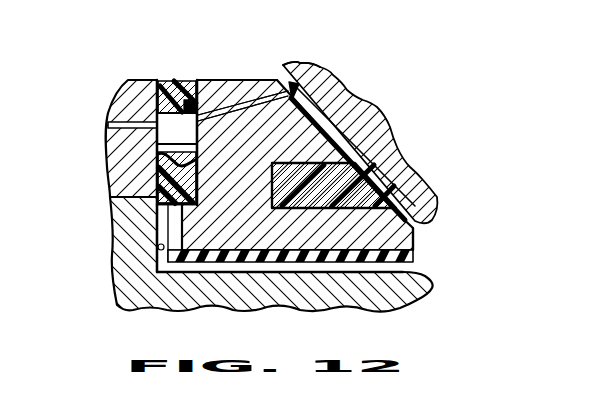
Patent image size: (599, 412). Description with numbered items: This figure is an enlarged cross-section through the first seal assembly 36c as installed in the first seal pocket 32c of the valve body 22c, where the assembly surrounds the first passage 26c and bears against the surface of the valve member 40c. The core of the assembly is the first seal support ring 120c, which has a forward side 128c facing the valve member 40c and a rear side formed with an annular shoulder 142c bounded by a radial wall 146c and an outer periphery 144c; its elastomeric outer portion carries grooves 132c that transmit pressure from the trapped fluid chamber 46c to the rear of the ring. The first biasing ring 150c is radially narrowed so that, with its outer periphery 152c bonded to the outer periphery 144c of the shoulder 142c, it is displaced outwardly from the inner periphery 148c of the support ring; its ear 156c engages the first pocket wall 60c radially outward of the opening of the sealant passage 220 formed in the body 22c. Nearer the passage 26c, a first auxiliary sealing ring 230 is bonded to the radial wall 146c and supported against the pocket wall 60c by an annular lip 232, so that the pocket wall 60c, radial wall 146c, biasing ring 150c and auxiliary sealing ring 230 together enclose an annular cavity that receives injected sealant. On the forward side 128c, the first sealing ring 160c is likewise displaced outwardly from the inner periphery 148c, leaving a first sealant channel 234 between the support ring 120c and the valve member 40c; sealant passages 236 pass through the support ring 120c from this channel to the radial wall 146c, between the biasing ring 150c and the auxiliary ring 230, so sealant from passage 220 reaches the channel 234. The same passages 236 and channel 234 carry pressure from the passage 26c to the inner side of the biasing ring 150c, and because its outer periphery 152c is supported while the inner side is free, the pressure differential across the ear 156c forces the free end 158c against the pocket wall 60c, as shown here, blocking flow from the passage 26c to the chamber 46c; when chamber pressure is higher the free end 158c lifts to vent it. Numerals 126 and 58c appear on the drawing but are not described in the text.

The first passage 26c is at (150, 28).
The first auxiliary sealing ring 230 is at (163, 76).
The annular lip 232 is at (185, 80).
The sealant passages 236 is at (245, 108).
The inner periphery 148c is at (251, 92).
The first seal assembly 36c is at (262, 66).
The first sealant channel 234 is at (306, 63).
The forward side 128c is at (336, 90).
The valve member 40c is at (350, 108).
The first sealing ring 160c is at (358, 122).
The first seal pocket 32c is at (151, 117).
The sealant passage 220 is at (108, 125).
The radial wall 146c is at (157, 147).
The ear 156c is at (157, 167).
The free end 158c is at (157, 185).
The first biasing ring 150c is at (165, 203).
The outer periphery of the shoulder 144c is at (170, 218).
The first seal support ring 120c is at (391, 243).
The first pocket wall 60c is at (158, 257).
The annular shoulder 142c is at (153, 262).
The valve body 22c is at (148, 291).
The outer periphery of the first biasing ring 152c is at (160, 207).
The passage 126 is at (186, 268).
The surface 58c is at (238, 270).
The grooves 132c is at (314, 262).
The trapped fluid chamber 46c is at (460, 264).